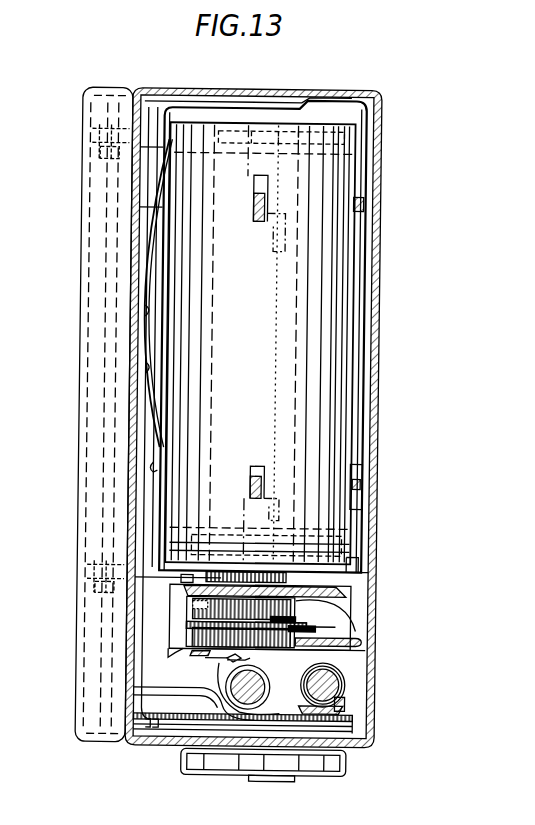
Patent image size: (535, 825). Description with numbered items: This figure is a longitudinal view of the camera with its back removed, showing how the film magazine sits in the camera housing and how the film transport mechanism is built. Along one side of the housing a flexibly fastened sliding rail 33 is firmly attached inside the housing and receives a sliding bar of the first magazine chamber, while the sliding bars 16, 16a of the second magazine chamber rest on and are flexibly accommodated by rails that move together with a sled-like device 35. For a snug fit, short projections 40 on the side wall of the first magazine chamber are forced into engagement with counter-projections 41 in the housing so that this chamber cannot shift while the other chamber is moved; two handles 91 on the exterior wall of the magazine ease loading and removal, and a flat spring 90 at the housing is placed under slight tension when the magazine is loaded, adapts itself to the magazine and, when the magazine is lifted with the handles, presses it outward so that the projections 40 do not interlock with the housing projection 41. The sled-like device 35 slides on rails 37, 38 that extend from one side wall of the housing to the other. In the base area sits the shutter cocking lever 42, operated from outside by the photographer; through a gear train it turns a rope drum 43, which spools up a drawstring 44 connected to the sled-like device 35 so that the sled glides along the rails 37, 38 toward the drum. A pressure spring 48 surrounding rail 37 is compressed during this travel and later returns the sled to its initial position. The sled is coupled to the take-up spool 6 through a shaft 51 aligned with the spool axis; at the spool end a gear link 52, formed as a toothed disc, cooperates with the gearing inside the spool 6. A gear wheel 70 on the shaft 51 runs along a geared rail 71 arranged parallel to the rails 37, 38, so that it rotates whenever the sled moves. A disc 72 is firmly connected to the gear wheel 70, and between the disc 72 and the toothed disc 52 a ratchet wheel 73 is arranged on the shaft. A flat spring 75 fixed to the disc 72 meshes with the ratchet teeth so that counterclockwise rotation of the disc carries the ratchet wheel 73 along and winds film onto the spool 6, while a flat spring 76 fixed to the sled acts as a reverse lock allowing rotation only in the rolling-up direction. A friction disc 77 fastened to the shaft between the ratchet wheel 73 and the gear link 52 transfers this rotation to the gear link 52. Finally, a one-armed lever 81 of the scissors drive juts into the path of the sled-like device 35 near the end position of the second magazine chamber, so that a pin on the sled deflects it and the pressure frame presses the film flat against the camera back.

The spool 6 is at (270, 366).
The sliding bar 16 is at (354, 556).
The sliding bar 16a is at (345, 108).
The sliding rail 33 is at (300, 93).
The sled-like device 35 is at (168, 645).
The rail 37 is at (337, 679).
The rail 38 is at (242, 682).
The short projections 40 is at (245, 193).
The counter-projections 41 is at (265, 243).
The shutter cocking lever 42 is at (313, 756).
The rope drum 43 is at (144, 735).
The drawstring 44 is at (320, 713).
The pressure spring 48 is at (340, 699).
The shaft 51 is at (224, 652).
The gear link 52 is at (270, 548).
The gear wheel 70 is at (192, 634).
The geared rail 71 is at (357, 635).
The disc 72 is at (334, 618).
The ratchet wheel 73 is at (300, 588).
The flat spring 75 is at (342, 590).
The flat spring 76 is at (192, 612).
The friction disc 77 is at (210, 567).
The one-armed lever 81 is at (133, 568).
The flat spring 90 is at (155, 385).
The handles 91 is at (354, 196).